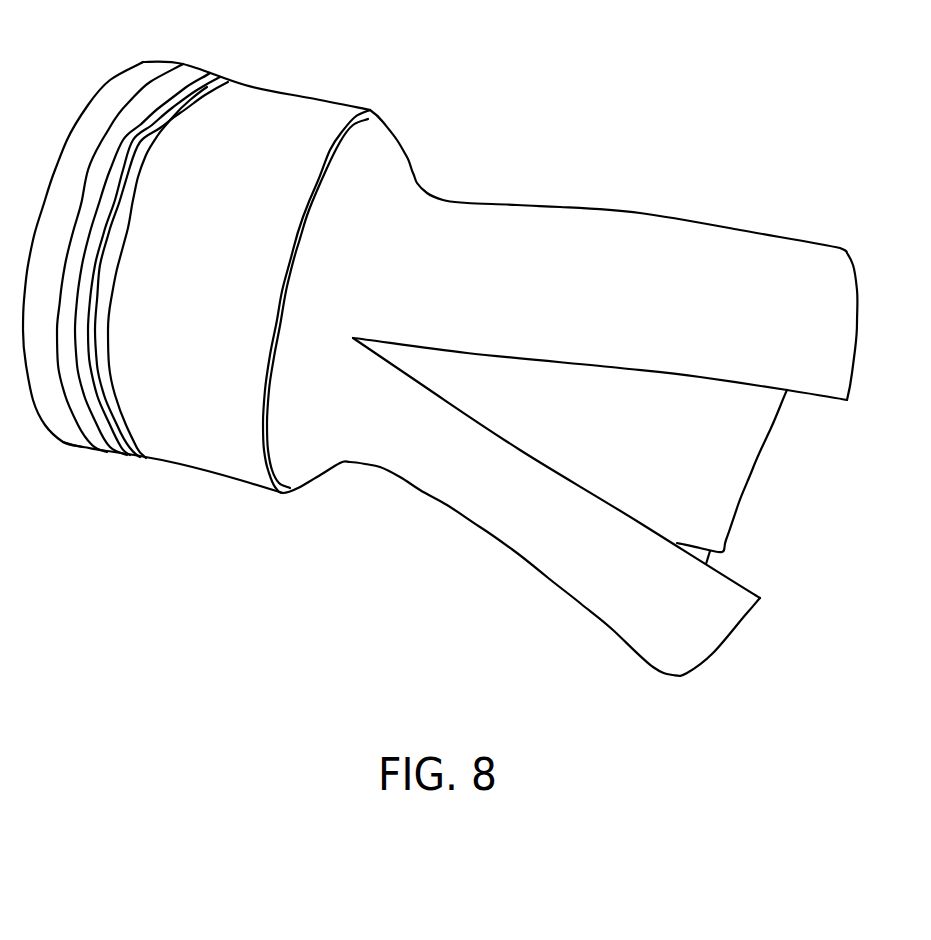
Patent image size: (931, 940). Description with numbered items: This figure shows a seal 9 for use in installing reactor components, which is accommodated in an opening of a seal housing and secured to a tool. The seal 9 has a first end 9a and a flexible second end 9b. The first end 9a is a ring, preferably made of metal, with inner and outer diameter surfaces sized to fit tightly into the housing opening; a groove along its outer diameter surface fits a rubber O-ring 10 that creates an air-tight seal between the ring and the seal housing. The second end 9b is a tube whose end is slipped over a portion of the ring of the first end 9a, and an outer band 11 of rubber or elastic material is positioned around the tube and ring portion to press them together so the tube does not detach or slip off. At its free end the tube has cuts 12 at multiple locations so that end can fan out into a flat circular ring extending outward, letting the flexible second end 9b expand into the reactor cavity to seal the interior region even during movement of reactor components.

The seal 9 is at (563, 148).
The first end 9a is at (153, 62).
The second end 9b is at (640, 237).
The rubber O-ring 10 is at (187, 63).
The outer band 11 is at (290, 105).
The cuts 12 is at (817, 397).